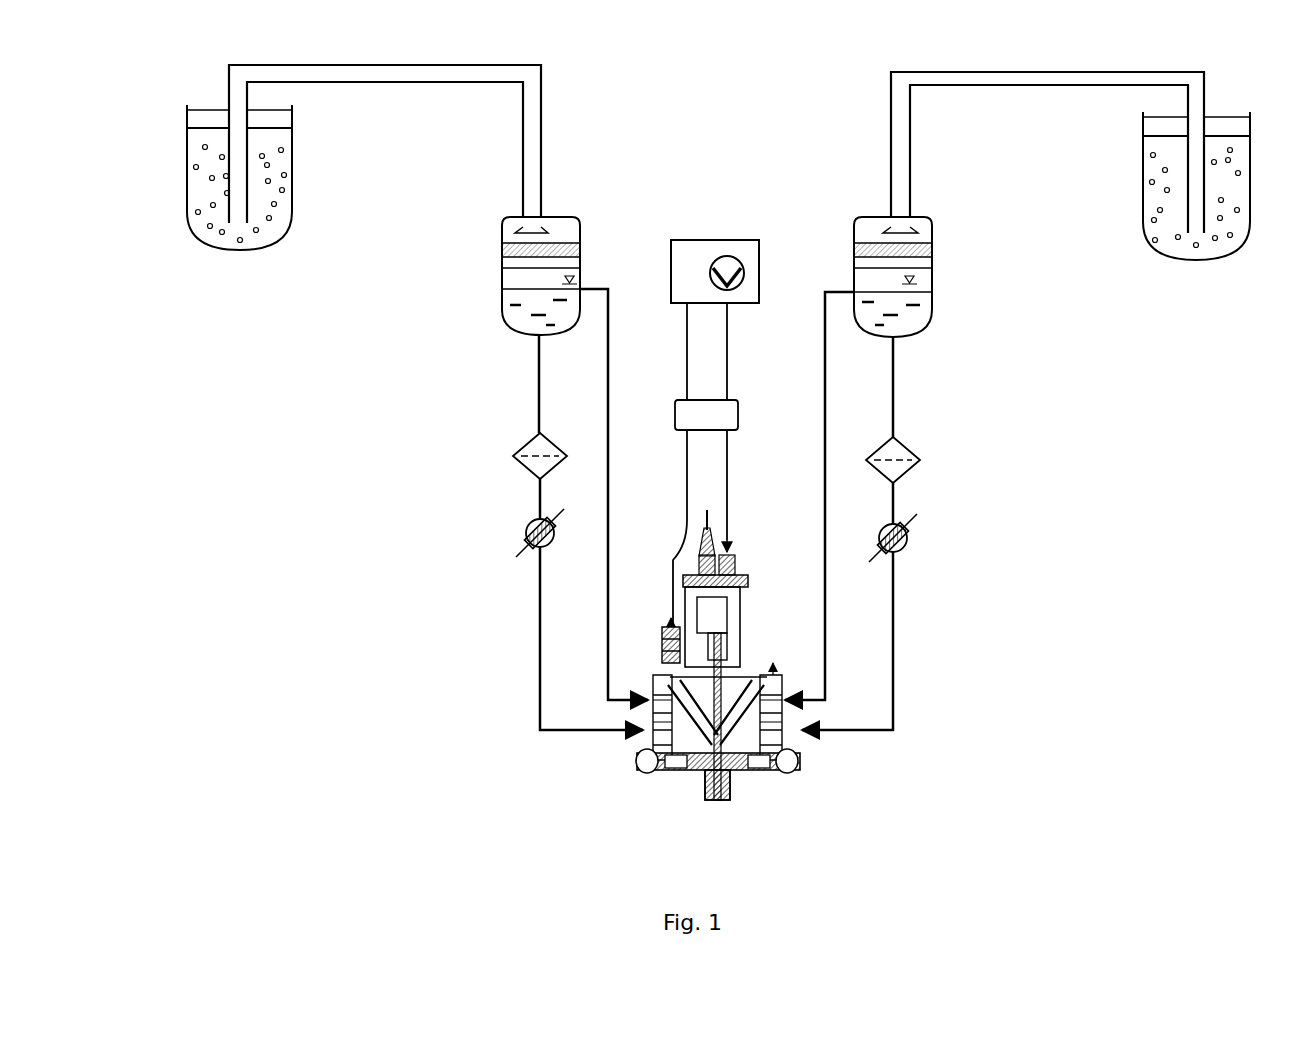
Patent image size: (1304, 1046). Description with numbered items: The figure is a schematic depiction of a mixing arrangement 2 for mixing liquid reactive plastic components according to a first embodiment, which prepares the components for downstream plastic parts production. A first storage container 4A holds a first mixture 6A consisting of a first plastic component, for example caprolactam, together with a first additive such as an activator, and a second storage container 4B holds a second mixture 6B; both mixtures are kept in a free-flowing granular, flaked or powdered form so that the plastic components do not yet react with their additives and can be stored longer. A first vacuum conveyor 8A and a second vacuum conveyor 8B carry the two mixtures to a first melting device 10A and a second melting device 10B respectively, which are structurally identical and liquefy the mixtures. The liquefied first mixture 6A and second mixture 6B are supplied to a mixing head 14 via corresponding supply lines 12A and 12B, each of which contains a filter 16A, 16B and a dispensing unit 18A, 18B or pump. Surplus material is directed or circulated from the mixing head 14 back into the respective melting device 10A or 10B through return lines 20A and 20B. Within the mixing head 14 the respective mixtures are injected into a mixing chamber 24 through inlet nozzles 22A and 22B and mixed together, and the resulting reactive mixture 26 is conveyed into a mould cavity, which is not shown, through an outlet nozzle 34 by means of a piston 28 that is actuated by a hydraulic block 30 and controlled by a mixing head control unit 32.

The mixing arrangement 2 is at (451, 575).
The first storage container 4A is at (293, 157).
The second storage container 4B is at (1143, 160).
The first mixture 6A is at (272, 190).
The second mixture 6B is at (1148, 200).
The first vacuum conveyor 8A is at (532, 162).
The second vacuum conveyor 8B is at (902, 160).
The first melting device 10A is at (586, 248).
The second melting device 10B is at (848, 250).
The first supply line 12A is at (538, 622).
The second supply line 12B is at (895, 626).
The mixing head 14 is at (625, 763).
The first filter 16A is at (530, 443).
The second filter 16B is at (908, 448).
The first dispensing unit 18A is at (528, 520).
The second dispensing unit 18B is at (905, 524).
The first return line 20A is at (609, 516).
The second return line 20B is at (824, 507).
The first inlet nozzle 22A is at (683, 778).
The second inlet nozzle 22B is at (740, 778).
The mixing chamber 24 is at (716, 800).
The reactive mixture 26 is at (717, 785).
The piston 28 is at (742, 717).
The hydraulic block 30 is at (758, 253).
The mixing head control unit 32 is at (735, 418).
The outlet nozzle 34 is at (720, 800).